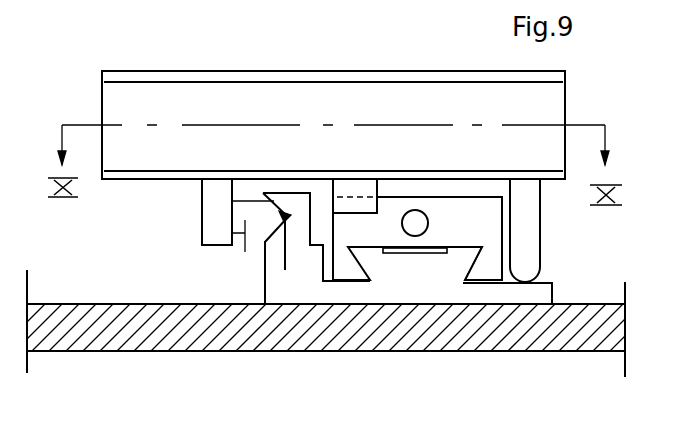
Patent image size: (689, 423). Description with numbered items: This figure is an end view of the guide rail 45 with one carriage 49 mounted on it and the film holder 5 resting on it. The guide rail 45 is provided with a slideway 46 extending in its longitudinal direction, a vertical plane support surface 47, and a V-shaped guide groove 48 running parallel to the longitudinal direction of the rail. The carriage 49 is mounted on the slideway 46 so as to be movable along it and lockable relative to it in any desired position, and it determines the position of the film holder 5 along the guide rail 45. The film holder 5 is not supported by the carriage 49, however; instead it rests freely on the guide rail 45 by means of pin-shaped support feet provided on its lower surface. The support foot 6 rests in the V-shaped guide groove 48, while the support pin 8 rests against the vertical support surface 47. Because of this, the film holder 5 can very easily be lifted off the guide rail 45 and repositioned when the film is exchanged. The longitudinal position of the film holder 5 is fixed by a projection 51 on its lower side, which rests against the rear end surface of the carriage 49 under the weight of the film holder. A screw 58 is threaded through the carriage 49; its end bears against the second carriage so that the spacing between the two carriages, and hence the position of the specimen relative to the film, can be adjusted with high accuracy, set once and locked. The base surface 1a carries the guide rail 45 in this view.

The base / floor 1a is at (228, 327).
The film holder 5 is at (118, 89).
The support foot 6 is at (245, 252).
The support pin 8 is at (527, 227).
The guide rail 45 is at (258, 292).
The slideway 46 is at (452, 277).
The vertical plane support surface 47 is at (545, 282).
The V-shaped guide groove 48 is at (285, 269).
The carriage 49 is at (485, 260).
The projection 51 is at (367, 188).
The screw 58 is at (413, 224).